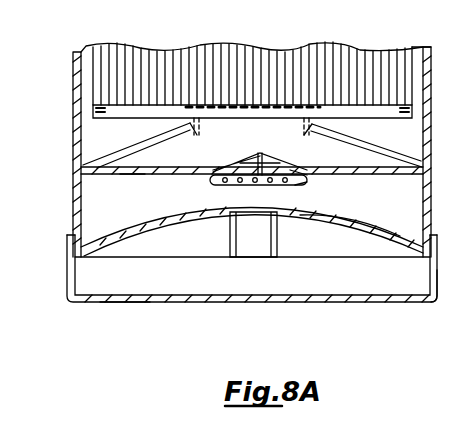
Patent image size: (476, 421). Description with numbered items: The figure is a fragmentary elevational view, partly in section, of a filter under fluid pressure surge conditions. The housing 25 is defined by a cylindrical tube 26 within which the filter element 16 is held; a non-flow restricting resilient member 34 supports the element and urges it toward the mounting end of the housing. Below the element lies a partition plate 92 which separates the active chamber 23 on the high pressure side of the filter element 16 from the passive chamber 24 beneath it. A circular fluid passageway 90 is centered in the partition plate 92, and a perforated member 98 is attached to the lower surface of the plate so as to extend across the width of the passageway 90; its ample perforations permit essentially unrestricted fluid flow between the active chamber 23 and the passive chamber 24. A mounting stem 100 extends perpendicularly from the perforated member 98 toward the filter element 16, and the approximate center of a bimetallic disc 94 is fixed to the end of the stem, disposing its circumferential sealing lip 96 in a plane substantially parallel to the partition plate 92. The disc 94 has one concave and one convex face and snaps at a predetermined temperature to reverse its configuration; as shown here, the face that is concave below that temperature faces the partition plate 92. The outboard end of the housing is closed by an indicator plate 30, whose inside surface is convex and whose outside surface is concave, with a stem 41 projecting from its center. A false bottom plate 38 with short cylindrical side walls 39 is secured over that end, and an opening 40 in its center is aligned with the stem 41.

The filter element 16 is at (354, 57).
The housing 25 is at (435, 46).
The cylindrical tube 26 is at (433, 96).
The resilient member 34 is at (394, 153).
The active chamber 23 is at (415, 161).
The passive chamber 24 is at (410, 208).
The partition plate 92 is at (134, 176).
The fluid passageway 90 is at (222, 177).
The sealing lip 96 is at (210, 164).
The perforated member 98 is at (300, 181).
The mounting stem 100 is at (258, 154).
The bimetallic disc 94 is at (360, 151).
The stem 41 is at (240, 259).
The opening 40 is at (244, 303).
The indicator plate 30 is at (347, 228).
The false bottom plate 38 is at (124, 303).
The cylindrical side walls 39 is at (439, 276).